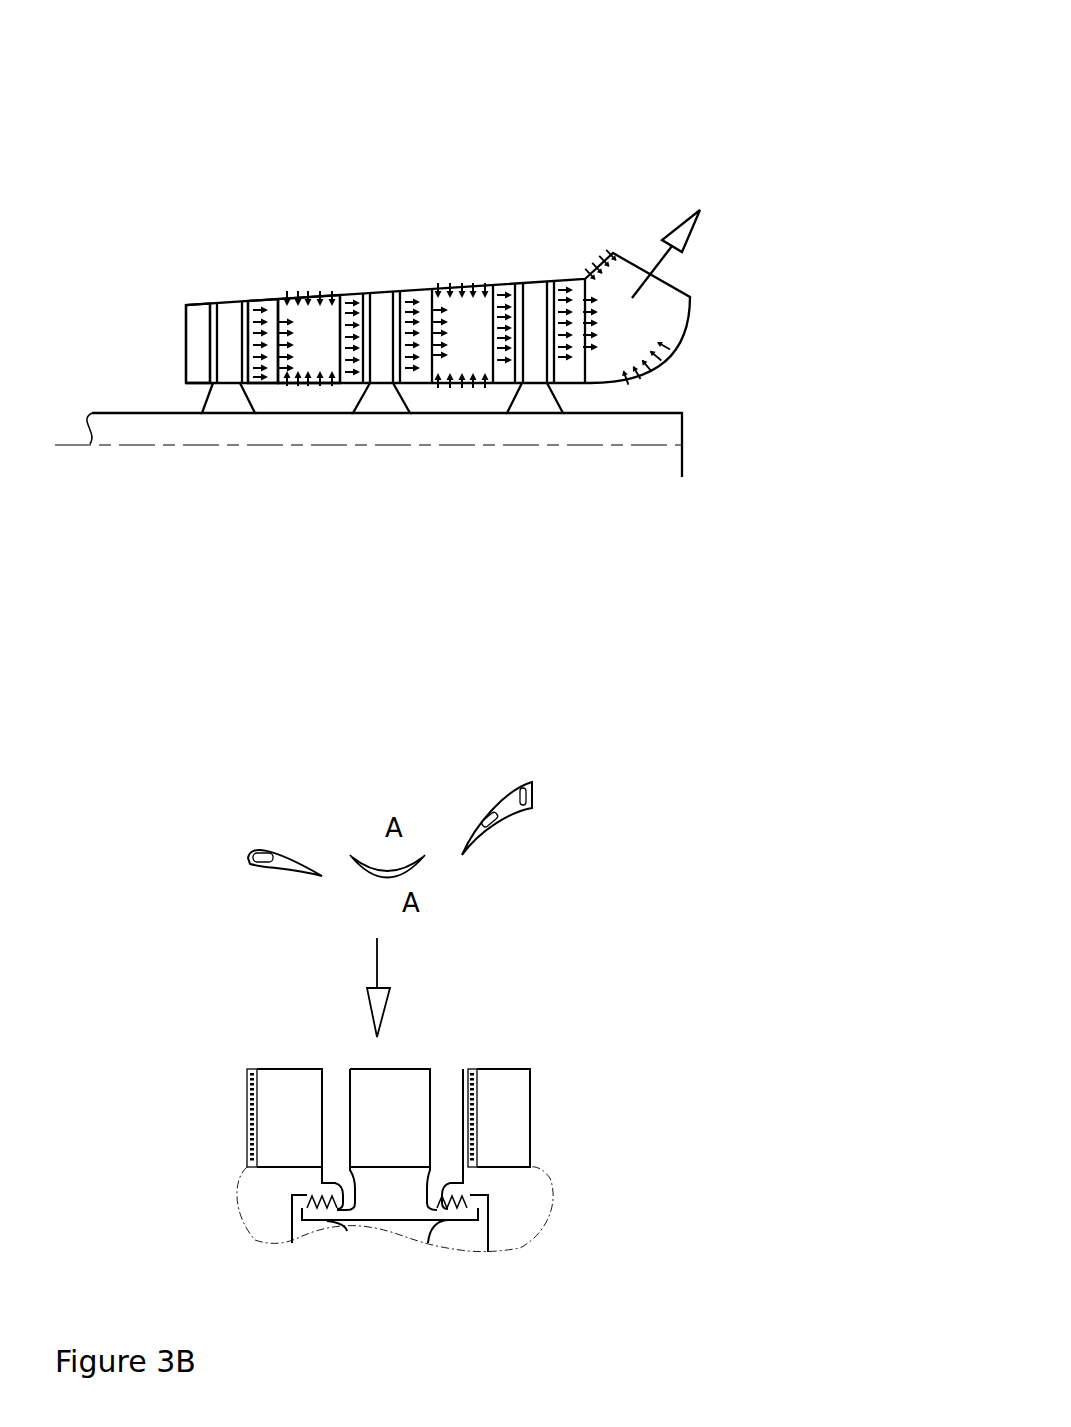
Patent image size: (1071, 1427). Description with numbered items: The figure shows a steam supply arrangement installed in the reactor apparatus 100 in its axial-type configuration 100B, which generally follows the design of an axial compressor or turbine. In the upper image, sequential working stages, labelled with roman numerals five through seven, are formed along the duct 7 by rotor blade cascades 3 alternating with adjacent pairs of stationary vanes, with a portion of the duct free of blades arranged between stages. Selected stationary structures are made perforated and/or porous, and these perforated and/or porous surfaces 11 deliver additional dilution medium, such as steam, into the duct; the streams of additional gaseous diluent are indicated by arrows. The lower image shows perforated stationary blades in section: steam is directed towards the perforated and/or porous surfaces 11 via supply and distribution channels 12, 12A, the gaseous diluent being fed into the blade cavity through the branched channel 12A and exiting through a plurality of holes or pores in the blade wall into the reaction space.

The reactor apparatus 100 is at (463, 589).
The reactor apparatus configuration 100B is at (866, 38).
The rotor blade cascade 3 is at (387, 1139).
The duct 7 is at (315, 358).
The perforated and/or porous surfaces 11 is at (652, 347).
The supply and distribution channels 12 is at (386, 790).
The branched channel 12A is at (260, 852).